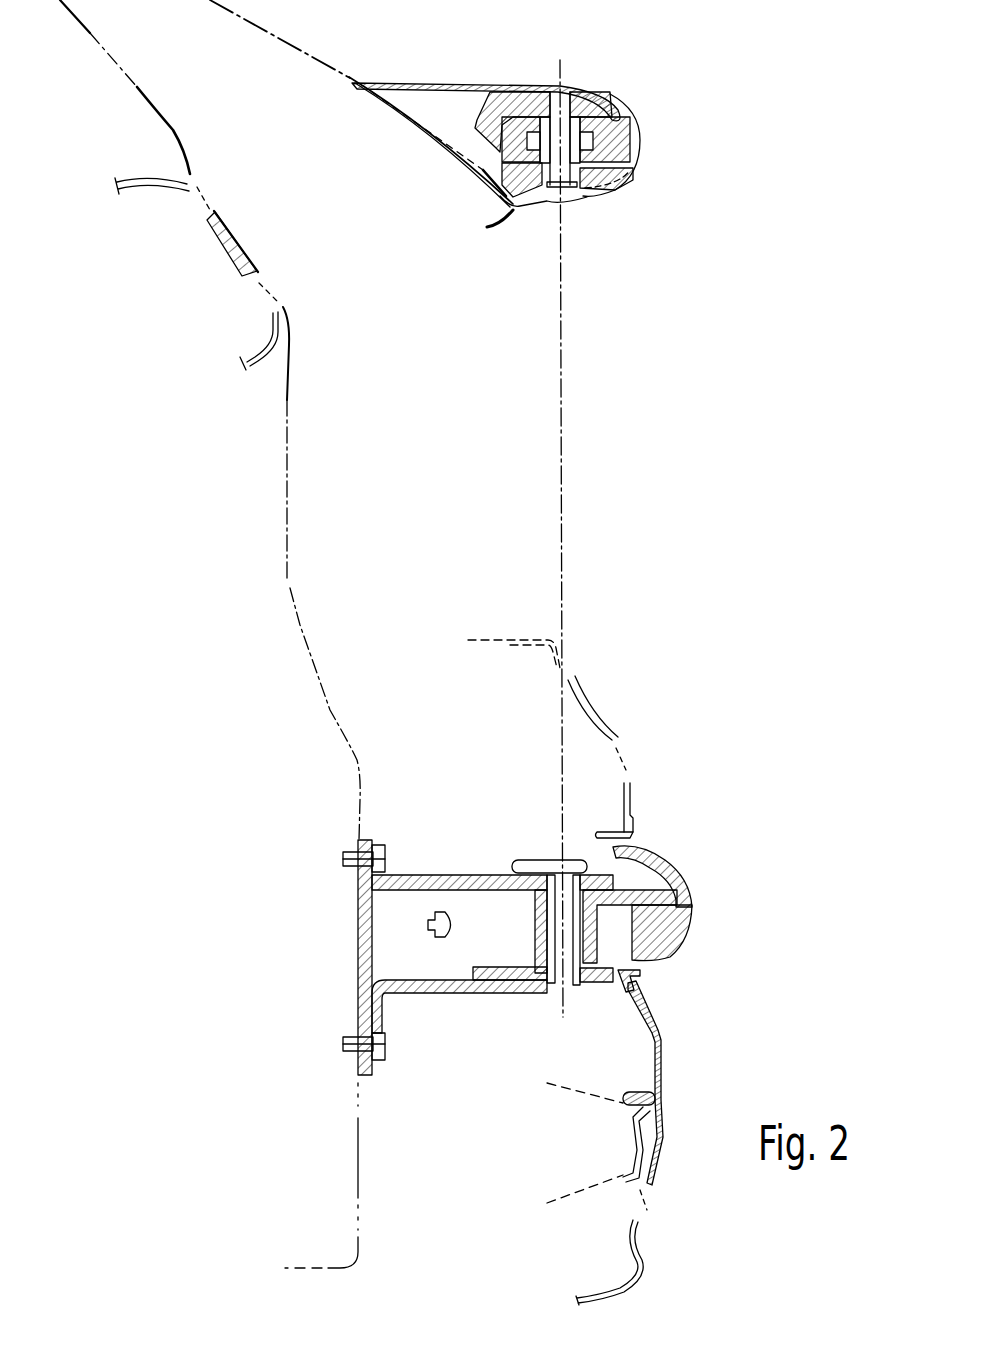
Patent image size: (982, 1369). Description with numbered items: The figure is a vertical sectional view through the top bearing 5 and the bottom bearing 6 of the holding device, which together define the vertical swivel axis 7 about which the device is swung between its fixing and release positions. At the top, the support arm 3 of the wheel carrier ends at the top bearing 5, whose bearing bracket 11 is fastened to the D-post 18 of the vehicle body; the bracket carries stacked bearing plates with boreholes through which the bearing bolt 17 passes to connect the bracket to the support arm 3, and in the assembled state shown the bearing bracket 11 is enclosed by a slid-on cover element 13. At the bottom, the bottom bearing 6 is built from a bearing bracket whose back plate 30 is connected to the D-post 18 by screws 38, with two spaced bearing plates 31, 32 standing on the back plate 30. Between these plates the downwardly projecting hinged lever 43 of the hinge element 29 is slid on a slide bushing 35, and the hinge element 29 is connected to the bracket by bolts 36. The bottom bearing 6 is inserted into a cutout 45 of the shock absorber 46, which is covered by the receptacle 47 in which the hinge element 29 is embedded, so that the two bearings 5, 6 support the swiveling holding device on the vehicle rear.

The support arm 3 is at (620, 147).
The top bearing 5 is at (617, 97).
The bottom bearing 6 is at (657, 837).
The vertical swivel axis 7 is at (562, 547).
The bearing bracket 11 is at (517, 90).
The cover element 13 is at (436, 84).
The bearing bolt 17 is at (573, 97).
The D-post 18 is at (325, 77).
The hinge element 29 is at (657, 928).
The back plate 30 is at (360, 943).
The bearing plate 31 is at (402, 877).
The bearing plate 32 is at (422, 995).
The slide bushing 35 is at (543, 940).
The bolt 36 is at (650, 905).
The screw 38 is at (343, 858).
The hinged lever 43 is at (535, 890).
The cutout 45 is at (632, 963).
The shock absorber 46 is at (613, 733).
The receptacle 47 is at (640, 983).